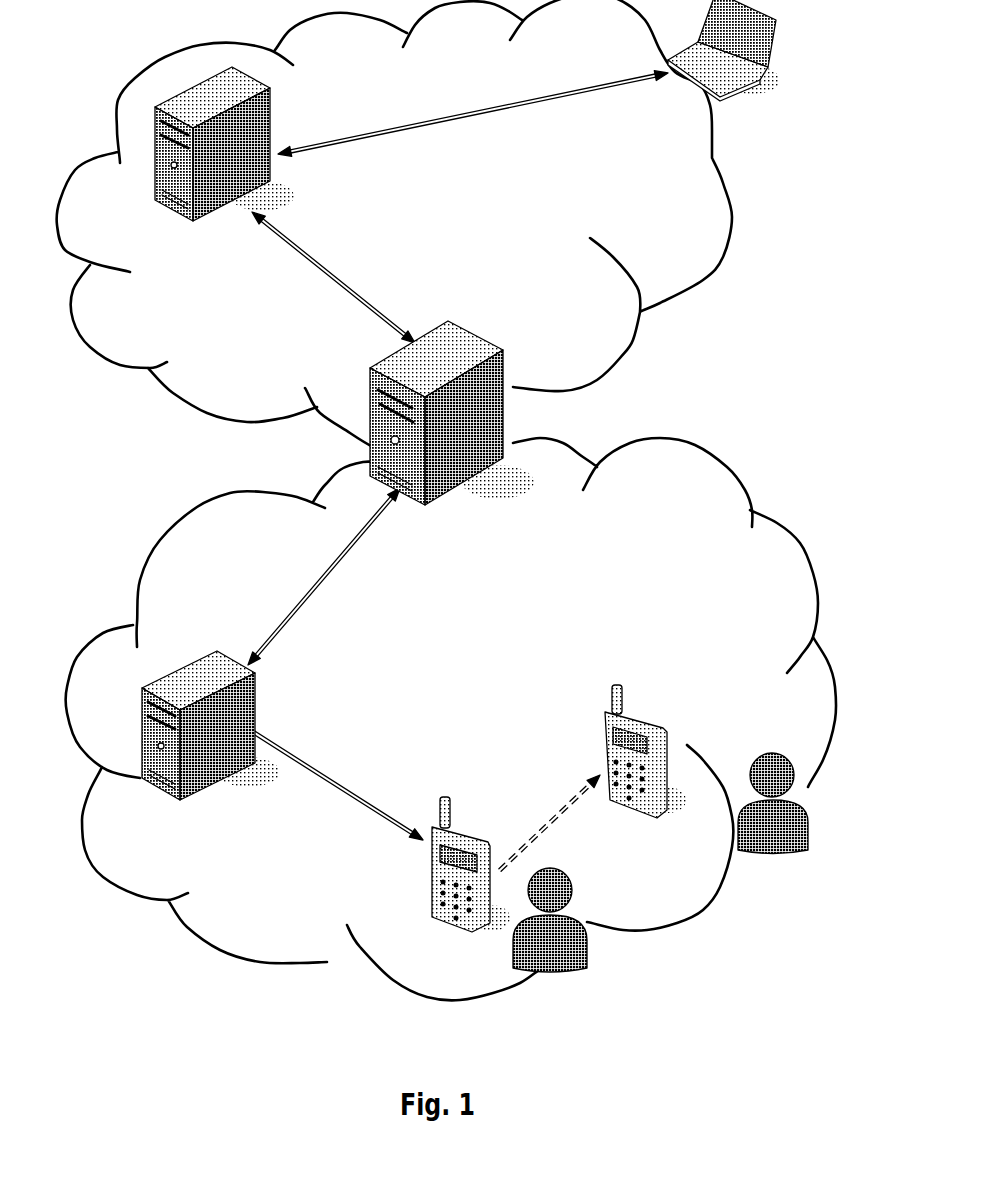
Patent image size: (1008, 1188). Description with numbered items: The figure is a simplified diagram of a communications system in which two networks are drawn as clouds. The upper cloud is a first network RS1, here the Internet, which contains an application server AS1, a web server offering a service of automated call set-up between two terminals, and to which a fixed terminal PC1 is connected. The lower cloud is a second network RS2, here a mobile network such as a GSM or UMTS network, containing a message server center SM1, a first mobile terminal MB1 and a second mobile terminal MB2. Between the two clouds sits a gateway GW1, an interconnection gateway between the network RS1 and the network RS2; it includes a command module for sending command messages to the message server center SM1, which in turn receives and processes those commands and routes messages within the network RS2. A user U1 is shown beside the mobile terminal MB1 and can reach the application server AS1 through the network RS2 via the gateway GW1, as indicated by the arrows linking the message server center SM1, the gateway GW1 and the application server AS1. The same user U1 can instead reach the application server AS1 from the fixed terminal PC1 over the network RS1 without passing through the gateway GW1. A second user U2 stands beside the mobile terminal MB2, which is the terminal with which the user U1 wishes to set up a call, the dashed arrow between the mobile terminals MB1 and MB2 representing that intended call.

The application server AS1 is at (155, 147).
The fixed terminal PC1 is at (732, 100).
The first network RS1 is at (687, 290).
The gateway GW1 is at (513, 428).
The second network RS2 is at (756, 508).
The message server center SM1 is at (142, 688).
The first mobile terminal MB1 is at (457, 933).
The second mobile terminal MB2 is at (642, 820).
The user U1 is at (585, 957).
The user U2 is at (777, 853).